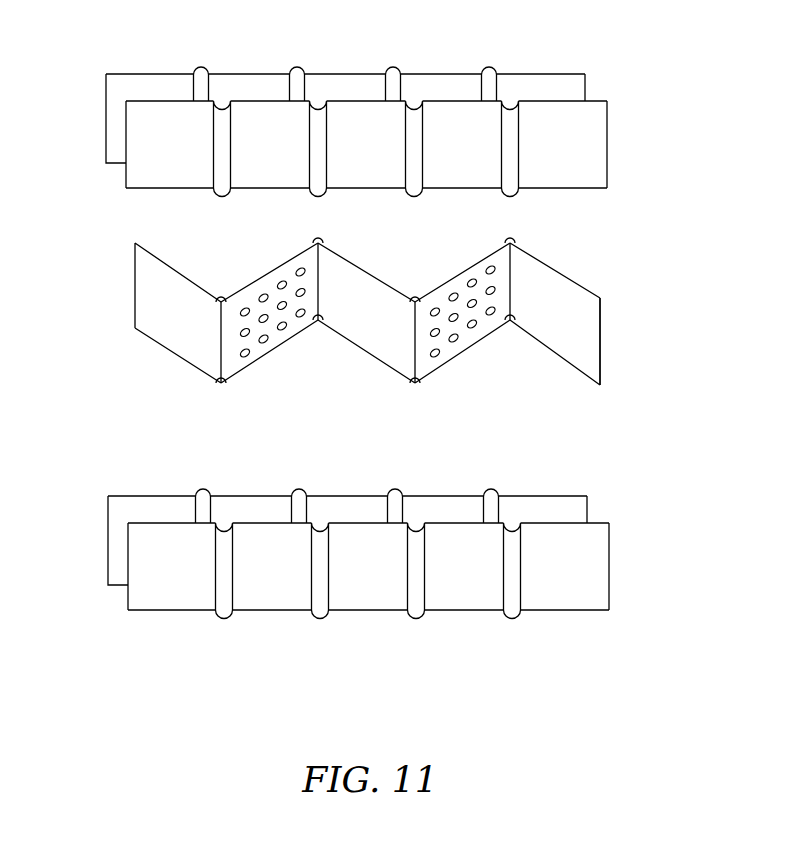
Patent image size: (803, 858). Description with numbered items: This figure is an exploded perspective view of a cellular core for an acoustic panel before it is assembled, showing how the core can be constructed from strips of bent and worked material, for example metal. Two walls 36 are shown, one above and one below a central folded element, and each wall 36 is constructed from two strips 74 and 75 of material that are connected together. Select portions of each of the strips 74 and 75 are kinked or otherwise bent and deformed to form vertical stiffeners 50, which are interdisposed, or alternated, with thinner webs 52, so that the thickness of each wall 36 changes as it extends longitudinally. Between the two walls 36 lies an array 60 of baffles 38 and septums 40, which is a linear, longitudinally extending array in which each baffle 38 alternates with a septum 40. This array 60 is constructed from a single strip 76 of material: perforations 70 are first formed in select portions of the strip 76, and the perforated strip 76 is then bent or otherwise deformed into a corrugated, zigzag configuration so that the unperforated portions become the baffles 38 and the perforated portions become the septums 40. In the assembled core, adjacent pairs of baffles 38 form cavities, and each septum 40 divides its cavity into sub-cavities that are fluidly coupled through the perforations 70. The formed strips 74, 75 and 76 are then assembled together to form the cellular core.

The wall 36 is at (97, 70).
The baffle 38 is at (185, 350).
The septum 40 is at (277, 345).
The vertical stiffener 50 is at (216, 630).
The web 52 is at (165, 612).
The array of baffles and septums 60 is at (97, 243).
The perforation 70 is at (299, 289).
The strip of material 74 is at (596, 81).
The strip of material 75 is at (598, 82).
The perforated strip of material 76 is at (612, 343).